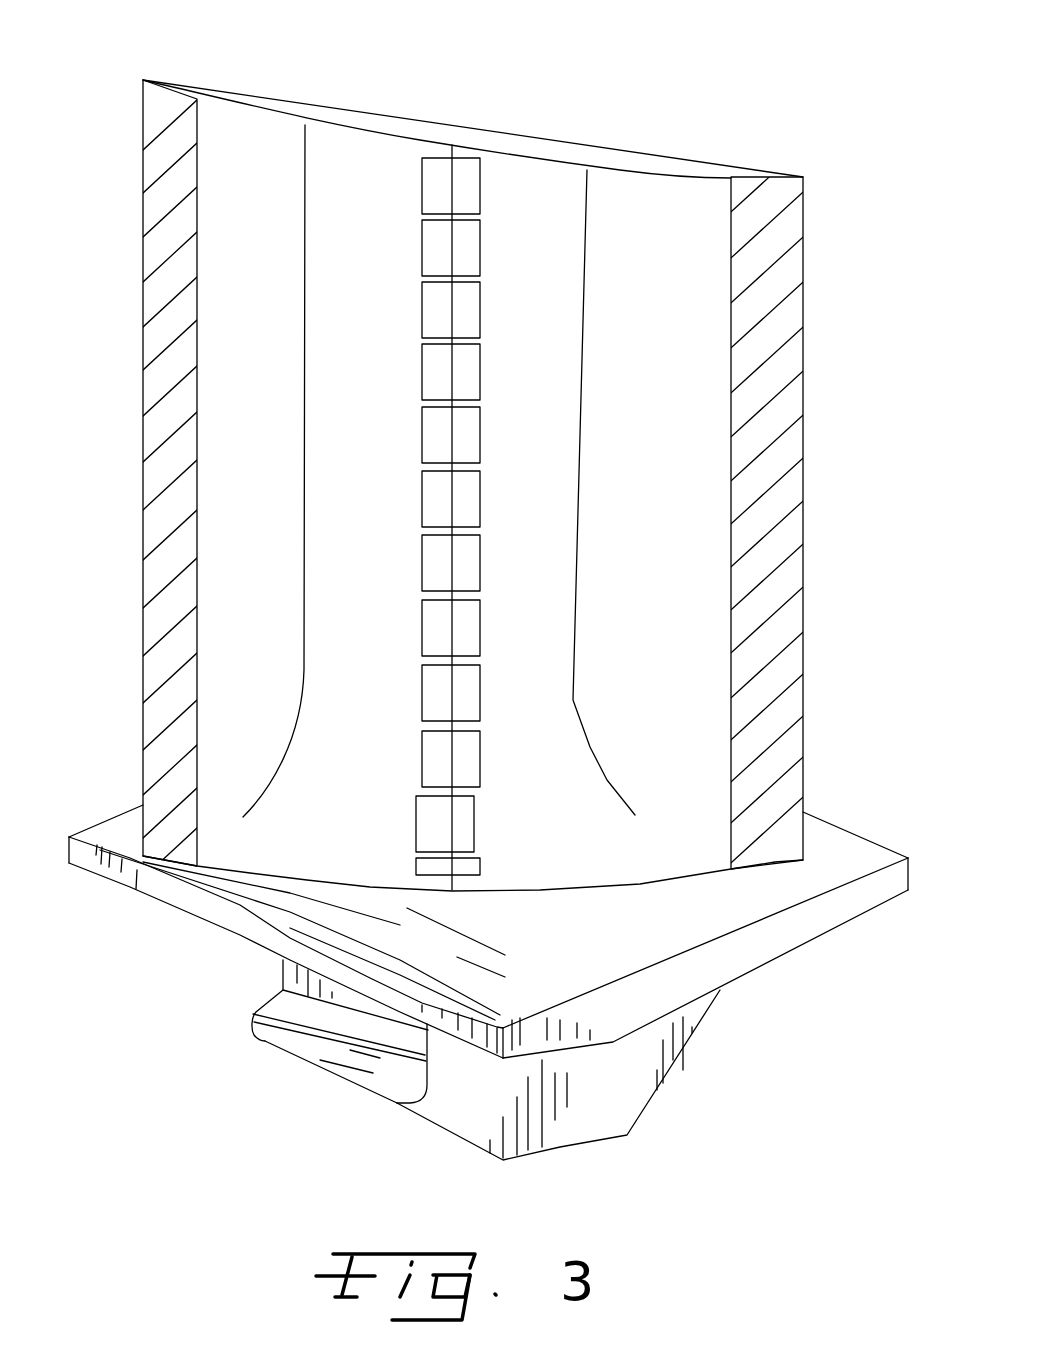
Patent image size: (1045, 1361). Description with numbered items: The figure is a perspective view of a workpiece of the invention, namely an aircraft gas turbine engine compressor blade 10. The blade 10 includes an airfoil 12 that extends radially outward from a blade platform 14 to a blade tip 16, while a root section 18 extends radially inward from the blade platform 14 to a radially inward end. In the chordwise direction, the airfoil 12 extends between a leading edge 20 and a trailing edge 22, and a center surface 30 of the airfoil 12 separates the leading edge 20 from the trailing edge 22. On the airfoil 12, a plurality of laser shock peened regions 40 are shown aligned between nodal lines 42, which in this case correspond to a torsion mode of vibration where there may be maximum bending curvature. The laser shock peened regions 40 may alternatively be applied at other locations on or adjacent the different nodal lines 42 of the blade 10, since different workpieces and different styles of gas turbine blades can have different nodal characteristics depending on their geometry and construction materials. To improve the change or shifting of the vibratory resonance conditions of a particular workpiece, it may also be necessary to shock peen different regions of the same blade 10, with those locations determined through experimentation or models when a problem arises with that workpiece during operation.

The blade 10 is at (835, 125).
The airfoil 12 is at (690, 859).
The blade platform 14 is at (762, 958).
The blade tip 16 is at (605, 158).
The root section 18 is at (297, 1043).
The leading edge 20 is at (152, 405).
The trailing edge 22 is at (800, 443).
The center surface 30 is at (318, 176).
The laser shock peened regions 40 is at (473, 255).
The nodal lines 42 is at (305, 148).